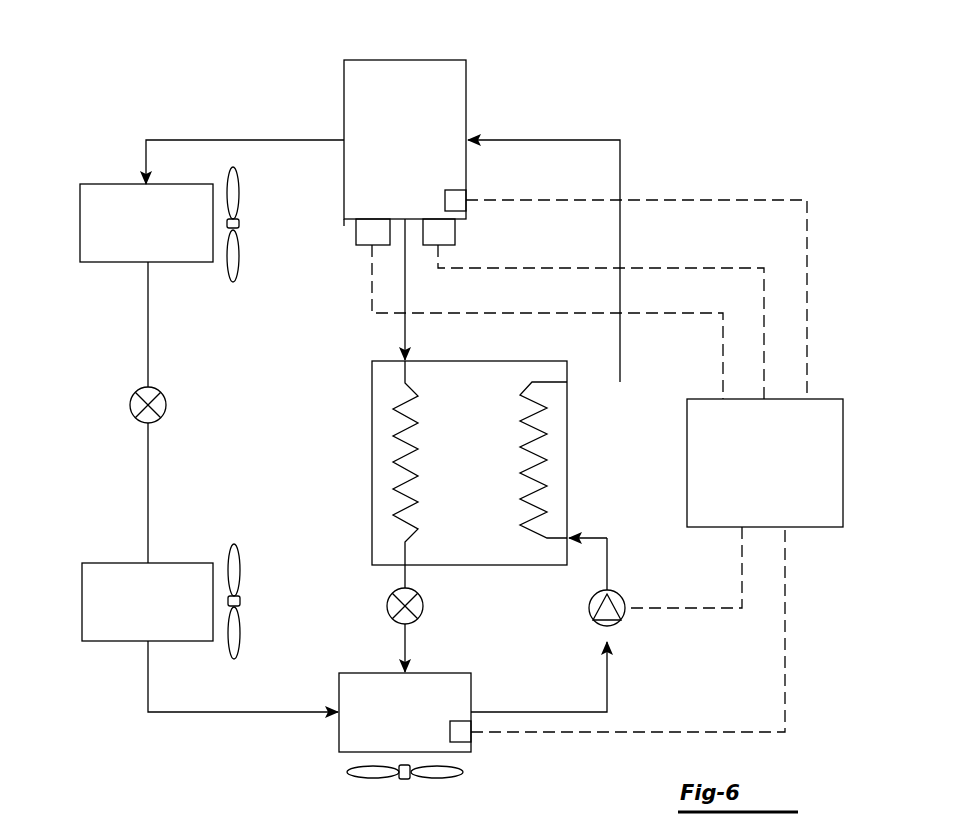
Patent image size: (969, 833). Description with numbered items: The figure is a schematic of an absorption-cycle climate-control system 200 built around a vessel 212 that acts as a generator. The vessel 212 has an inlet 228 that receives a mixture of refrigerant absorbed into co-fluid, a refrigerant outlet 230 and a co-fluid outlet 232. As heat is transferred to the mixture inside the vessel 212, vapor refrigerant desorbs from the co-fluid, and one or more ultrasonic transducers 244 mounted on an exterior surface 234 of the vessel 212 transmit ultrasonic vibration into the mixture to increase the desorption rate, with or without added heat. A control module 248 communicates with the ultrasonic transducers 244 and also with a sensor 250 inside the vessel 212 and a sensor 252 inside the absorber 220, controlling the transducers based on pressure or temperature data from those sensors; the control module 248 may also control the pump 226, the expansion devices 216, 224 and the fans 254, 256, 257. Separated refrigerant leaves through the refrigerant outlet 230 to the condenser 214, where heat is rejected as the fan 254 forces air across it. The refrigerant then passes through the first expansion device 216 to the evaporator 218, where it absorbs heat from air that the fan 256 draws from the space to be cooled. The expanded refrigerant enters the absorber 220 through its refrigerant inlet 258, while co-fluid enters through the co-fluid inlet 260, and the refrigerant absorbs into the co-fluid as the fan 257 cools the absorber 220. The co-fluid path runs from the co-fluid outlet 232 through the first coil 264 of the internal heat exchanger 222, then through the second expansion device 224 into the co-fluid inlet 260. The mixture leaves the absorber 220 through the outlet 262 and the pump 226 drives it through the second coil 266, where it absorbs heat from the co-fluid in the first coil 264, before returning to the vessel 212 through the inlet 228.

The absorption-cycle climate-control system 200 is at (168, 86).
The vessel 212 is at (423, 58).
The condenser 214 is at (80, 199).
The first expansion device 216 is at (130, 402).
The evaporator 218 is at (82, 599).
The absorber 220 is at (356, 670).
The internal heat exchanger 222 is at (370, 404).
The second expansion device 224 is at (425, 600).
The pump 226 is at (620, 598).
The inlet 228 is at (470, 136).
The refrigerant outlet 230 is at (344, 136).
The co-fluid outlet 232 is at (405, 215).
The exterior surface 234 is at (346, 222).
The ultrasonic transducers 244 is at (360, 246).
The control module 248 is at (843, 418).
The sensor 250 is at (451, 190).
The sensor 252 is at (450, 728).
The fan 254 is at (240, 282).
The fan 256 is at (244, 544).
The fan 257 is at (462, 773).
The refrigerant inlet 258 is at (338, 714).
The co-fluid inlet 260 is at (408, 672).
The outlet 262 is at (474, 712).
The first coil 264 is at (418, 488).
The second coil 266 is at (530, 462).